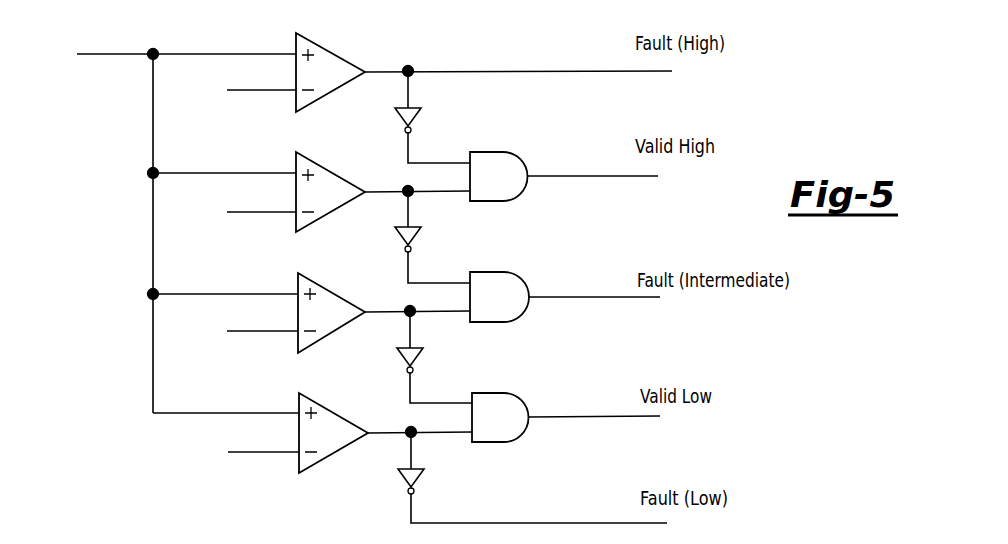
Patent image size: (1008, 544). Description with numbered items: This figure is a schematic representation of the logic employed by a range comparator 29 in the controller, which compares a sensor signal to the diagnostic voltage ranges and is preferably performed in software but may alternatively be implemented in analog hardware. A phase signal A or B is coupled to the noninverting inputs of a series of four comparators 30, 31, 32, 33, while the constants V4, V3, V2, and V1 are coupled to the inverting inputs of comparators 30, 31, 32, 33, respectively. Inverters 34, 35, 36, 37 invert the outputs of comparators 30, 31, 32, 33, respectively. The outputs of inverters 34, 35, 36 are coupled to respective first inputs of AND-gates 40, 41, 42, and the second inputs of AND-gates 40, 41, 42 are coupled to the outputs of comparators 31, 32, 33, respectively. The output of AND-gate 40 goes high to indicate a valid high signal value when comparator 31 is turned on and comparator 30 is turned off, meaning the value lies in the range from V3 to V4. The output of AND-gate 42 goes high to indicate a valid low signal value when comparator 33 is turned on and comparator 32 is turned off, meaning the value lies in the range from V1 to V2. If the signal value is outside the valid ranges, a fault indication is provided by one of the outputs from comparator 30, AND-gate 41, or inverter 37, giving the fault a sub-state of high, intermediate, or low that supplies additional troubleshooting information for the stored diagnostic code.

The range comparator 29 is at (192, 468).
The comparator 30 is at (326, 50).
The comparator 31 is at (327, 170).
The comparator 32 is at (328, 290).
The comparator 33 is at (330, 412).
The inverter 34 is at (419, 120).
The inverter 35 is at (419, 239).
The inverter 36 is at (421, 360).
The inverter 37 is at (422, 481).
The AND-gate 40 is at (517, 153).
The AND-gate 41 is at (517, 273).
The AND-gate 42 is at (518, 394).